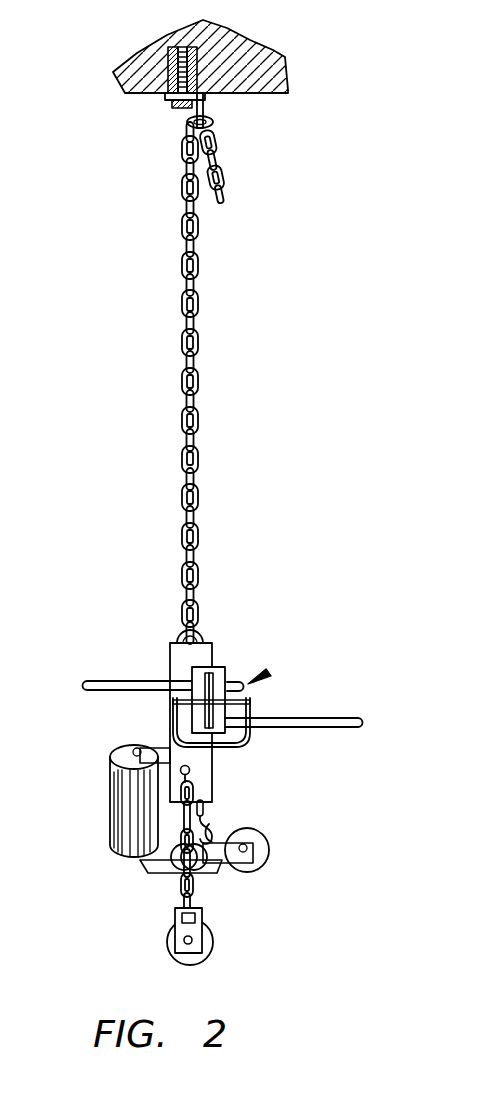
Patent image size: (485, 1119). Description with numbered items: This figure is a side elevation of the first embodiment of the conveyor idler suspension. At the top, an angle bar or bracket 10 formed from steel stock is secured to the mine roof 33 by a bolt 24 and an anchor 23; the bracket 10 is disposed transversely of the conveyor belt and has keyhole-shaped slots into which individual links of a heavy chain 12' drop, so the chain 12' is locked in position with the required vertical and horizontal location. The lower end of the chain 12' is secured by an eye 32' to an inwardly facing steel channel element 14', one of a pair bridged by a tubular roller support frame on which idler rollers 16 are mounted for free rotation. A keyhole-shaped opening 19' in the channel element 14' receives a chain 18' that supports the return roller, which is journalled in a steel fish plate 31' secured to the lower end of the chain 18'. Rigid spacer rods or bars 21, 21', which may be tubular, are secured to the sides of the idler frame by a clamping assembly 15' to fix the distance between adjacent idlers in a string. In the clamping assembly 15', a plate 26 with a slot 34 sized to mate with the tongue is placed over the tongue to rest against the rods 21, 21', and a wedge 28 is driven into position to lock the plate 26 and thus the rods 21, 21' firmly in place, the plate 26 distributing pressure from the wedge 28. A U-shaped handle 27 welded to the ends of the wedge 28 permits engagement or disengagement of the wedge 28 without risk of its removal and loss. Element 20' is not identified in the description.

The angle bar or bracket 10 is at (203, 107).
The heavy chain 12' is at (230, 383).
The steel channel element 14' is at (228, 679).
The clamping assembly 15' is at (293, 669).
The idler roller 16 is at (115, 842).
The chain 18' is at (242, 820).
The keyhole-shaped opening 19' is at (235, 778).
The lower block 20' is at (225, 936).
The rigid spacer rod or bar 21 is at (146, 670).
The rigid spacer rod or bar 21' is at (295, 746).
The anchor 23 is at (195, 72).
The bolt 24 is at (182, 108).
The plate 26 is at (217, 682).
The U-shaped handle 27 is at (173, 718).
The wedge 28 is at (173, 702).
The steel fish plate 31' is at (222, 905).
The eye 32' is at (157, 623).
The mine roof 33 is at (270, 67).
The slot 34 is at (210, 718).